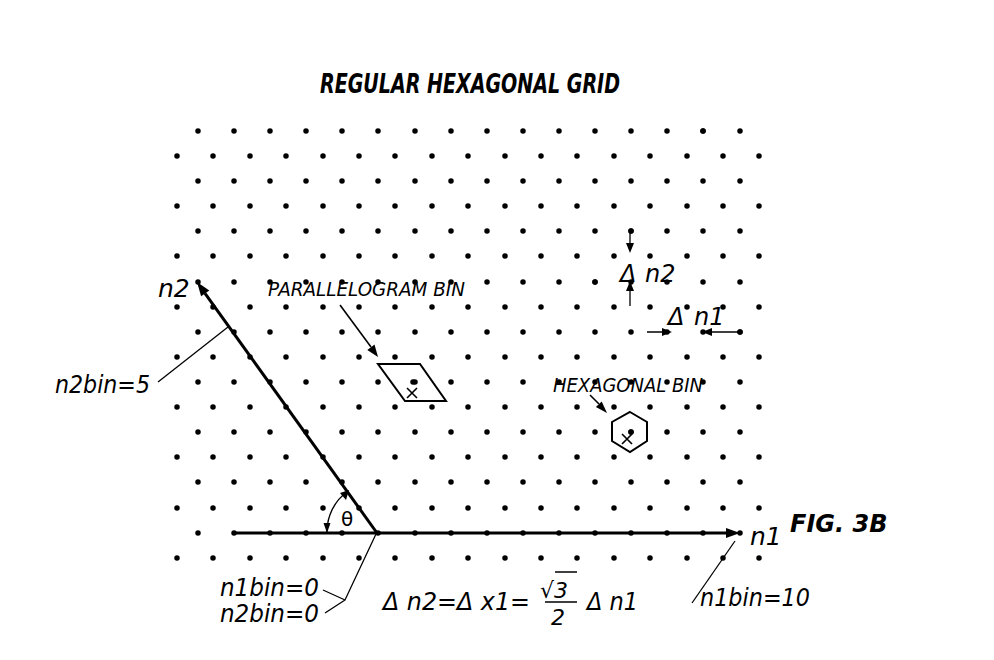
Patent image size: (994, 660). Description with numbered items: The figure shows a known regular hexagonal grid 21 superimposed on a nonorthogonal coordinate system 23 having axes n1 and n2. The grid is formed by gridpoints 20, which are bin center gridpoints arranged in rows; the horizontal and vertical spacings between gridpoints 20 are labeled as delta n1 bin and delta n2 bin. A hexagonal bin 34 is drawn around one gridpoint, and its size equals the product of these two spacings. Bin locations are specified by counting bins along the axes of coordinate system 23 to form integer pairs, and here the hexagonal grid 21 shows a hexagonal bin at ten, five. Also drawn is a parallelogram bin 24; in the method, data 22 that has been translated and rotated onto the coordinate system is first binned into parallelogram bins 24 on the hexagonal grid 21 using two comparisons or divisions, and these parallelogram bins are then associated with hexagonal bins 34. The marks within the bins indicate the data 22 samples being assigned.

The gridpoint 20 is at (703, 128).
The regular hexagonal grid 21 is at (142, 124).
The data 22 is at (411, 395).
The nonorthogonal coordinate system 23 is at (295, 420).
The parallelogram bin 24 is at (431, 378).
The hexagonal bin 34 is at (647, 441).